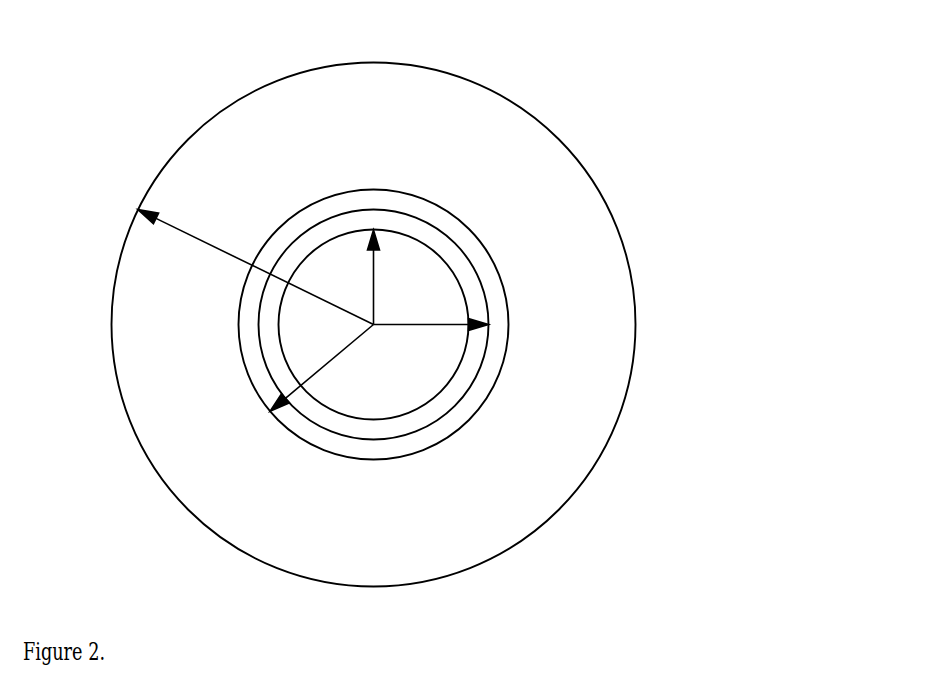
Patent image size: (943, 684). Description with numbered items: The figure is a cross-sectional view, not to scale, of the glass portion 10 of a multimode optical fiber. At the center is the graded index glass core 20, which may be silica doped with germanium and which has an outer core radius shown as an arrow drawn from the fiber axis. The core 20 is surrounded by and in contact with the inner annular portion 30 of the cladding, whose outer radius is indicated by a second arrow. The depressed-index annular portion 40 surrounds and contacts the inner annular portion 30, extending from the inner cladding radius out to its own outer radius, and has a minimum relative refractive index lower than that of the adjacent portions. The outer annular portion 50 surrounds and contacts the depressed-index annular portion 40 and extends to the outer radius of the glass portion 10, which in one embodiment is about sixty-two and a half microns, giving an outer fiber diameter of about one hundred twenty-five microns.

The glass portion 10 is at (673, 53).
The graded index glass core 20 is at (407, 237).
The inner annular portion 30 is at (488, 303).
The depressed-index annular portion 40 is at (258, 397).
The outer annular portion 50 is at (170, 162).